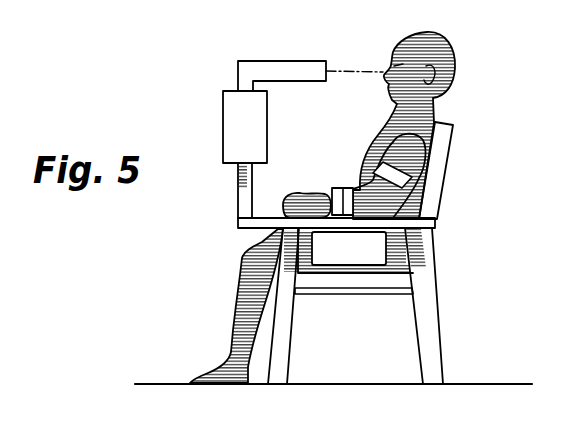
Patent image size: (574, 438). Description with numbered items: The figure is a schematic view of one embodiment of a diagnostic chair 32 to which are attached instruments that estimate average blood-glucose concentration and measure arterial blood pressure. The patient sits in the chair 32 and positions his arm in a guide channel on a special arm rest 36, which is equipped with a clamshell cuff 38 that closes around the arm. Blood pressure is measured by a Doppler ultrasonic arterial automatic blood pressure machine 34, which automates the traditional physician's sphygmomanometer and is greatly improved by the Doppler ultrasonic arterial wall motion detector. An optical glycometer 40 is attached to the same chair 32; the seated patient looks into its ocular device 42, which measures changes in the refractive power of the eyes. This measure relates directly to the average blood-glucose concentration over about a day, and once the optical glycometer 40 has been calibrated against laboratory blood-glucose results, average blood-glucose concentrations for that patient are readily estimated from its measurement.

The chair 32 is at (420, 268).
The Doppler ultrasonic arterial automatic blood pressure machine 34 is at (357, 256).
The arm rest 36 is at (257, 229).
The clamshell cuff 38 is at (336, 188).
The optical glycometer 40 is at (230, 107).
The ocular device 42 is at (285, 60).